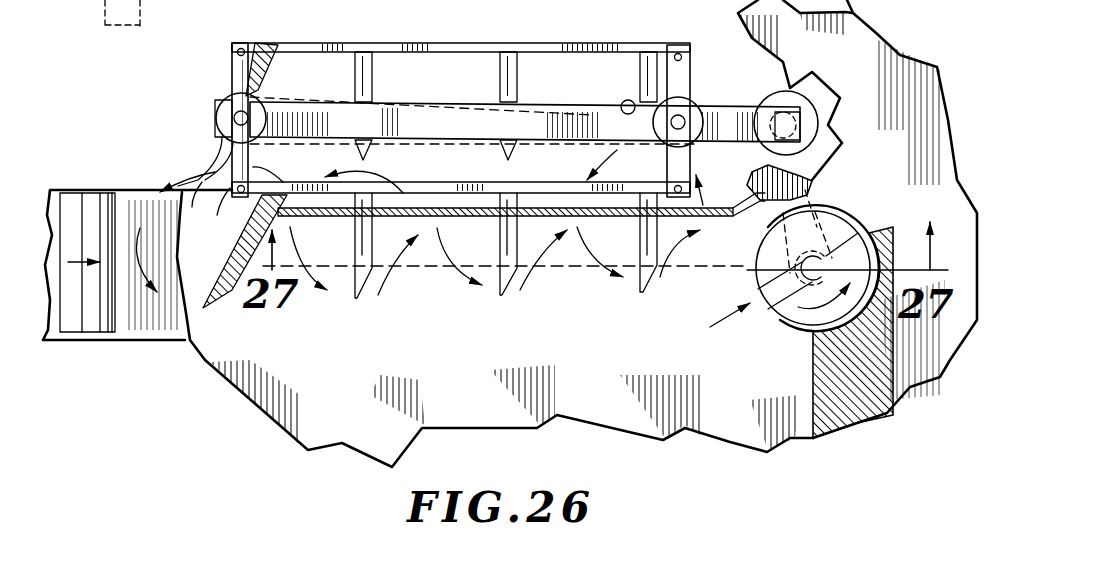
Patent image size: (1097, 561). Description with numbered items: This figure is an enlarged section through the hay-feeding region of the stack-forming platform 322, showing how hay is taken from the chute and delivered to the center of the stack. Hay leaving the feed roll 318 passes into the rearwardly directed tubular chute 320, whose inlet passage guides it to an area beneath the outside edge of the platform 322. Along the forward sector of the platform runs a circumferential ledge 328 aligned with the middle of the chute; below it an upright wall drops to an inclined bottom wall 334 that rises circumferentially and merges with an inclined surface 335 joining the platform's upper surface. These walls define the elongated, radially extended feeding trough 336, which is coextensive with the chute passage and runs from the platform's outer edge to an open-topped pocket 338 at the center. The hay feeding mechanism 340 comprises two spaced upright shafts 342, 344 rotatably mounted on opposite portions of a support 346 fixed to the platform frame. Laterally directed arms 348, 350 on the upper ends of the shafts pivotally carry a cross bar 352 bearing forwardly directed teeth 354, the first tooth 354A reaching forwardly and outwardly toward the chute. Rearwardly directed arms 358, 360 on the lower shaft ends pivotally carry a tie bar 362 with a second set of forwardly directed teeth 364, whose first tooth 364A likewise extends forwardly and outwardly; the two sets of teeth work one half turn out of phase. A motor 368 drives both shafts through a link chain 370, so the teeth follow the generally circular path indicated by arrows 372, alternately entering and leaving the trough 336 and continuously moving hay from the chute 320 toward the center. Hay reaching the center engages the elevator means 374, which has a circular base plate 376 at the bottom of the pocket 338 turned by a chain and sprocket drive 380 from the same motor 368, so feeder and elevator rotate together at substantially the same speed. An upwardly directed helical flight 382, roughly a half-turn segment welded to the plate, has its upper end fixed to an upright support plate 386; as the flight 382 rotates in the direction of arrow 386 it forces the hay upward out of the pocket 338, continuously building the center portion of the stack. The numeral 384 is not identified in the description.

The feed roll 318 is at (82, 312).
The tubular chute 320 is at (163, 320).
The platform 322 is at (863, 33).
The ledge 328 is at (573, 250).
The bottom wall 334 is at (478, 395).
The inclined surface 335 is at (842, 413).
The feeding trough 336 is at (453, 333).
The pocket 338 is at (812, 204).
The hay feeding mechanism 340 is at (160, 128).
The upright shaft 342 is at (236, 116).
The upright shaft 344 is at (690, 107).
The support 346 is at (438, 127).
The laterally directed arm 348 is at (217, 210).
The laterally directed arm 350 is at (751, 177).
The cross bar 352 is at (623, 165).
The teeth 354 is at (350, 298).
The first tooth 354A is at (207, 300).
The rearwardly directed arm 358 is at (238, 72).
The rearwardly directed arm 360 is at (681, 68).
The tie bar 362 is at (588, 48).
The teeth 364 is at (356, 64).
The first tooth 364A is at (220, 155).
The motor 368 is at (788, 90).
The link chain 370 is at (593, 117).
The arrows 372 is at (370, 170).
The elevator means 374 is at (710, 331).
The circular base plate 376 is at (777, 253).
The chain and sprocket drive 380 is at (812, 187).
The helical flight 382 is at (783, 313).
The slot 384 is at (758, 282).
The support plate 386 is at (790, 326).